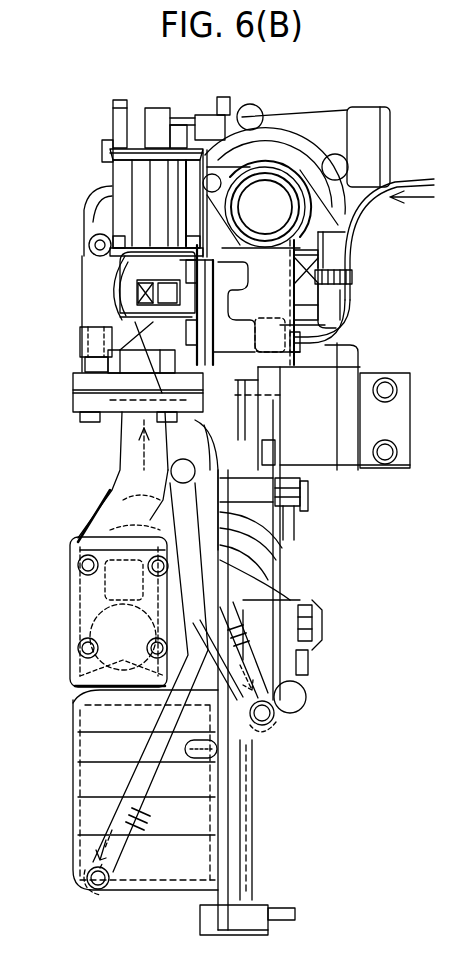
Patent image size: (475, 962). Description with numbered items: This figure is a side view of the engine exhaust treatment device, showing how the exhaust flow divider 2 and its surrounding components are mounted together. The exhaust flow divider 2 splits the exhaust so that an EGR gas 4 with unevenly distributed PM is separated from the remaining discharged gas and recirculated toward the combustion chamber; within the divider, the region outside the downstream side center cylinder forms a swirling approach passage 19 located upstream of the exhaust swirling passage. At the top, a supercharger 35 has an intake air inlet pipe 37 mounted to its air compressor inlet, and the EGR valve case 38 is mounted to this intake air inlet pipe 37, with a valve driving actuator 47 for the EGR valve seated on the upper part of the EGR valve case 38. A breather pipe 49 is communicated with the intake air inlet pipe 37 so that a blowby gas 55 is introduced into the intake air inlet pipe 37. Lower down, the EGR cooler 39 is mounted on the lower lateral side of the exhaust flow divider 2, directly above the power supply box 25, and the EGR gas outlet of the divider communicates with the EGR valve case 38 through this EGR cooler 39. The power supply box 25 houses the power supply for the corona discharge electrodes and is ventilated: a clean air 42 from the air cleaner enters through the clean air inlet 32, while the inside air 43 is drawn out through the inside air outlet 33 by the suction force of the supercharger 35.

The exhaust flow divider 2 is at (72, 253).
The EGR gas 4 is at (140, 456).
The swirling approach passage 19 is at (100, 205).
The power supply box 25 is at (147, 884).
The clean air inlet 32 is at (92, 884).
The inside air outlet 33 is at (272, 724).
The supercharger 35 is at (286, 113).
The intake air inlet pipe 37 is at (290, 175).
The EGR valve case 38 is at (128, 332).
The EGR cooler 39 is at (113, 627).
The clean air 42 is at (130, 848).
The inside air 43 is at (302, 700).
The valve driving actuator 47 is at (146, 178).
The breather pipe 49 is at (354, 236).
The blowby gas 55 is at (420, 203).